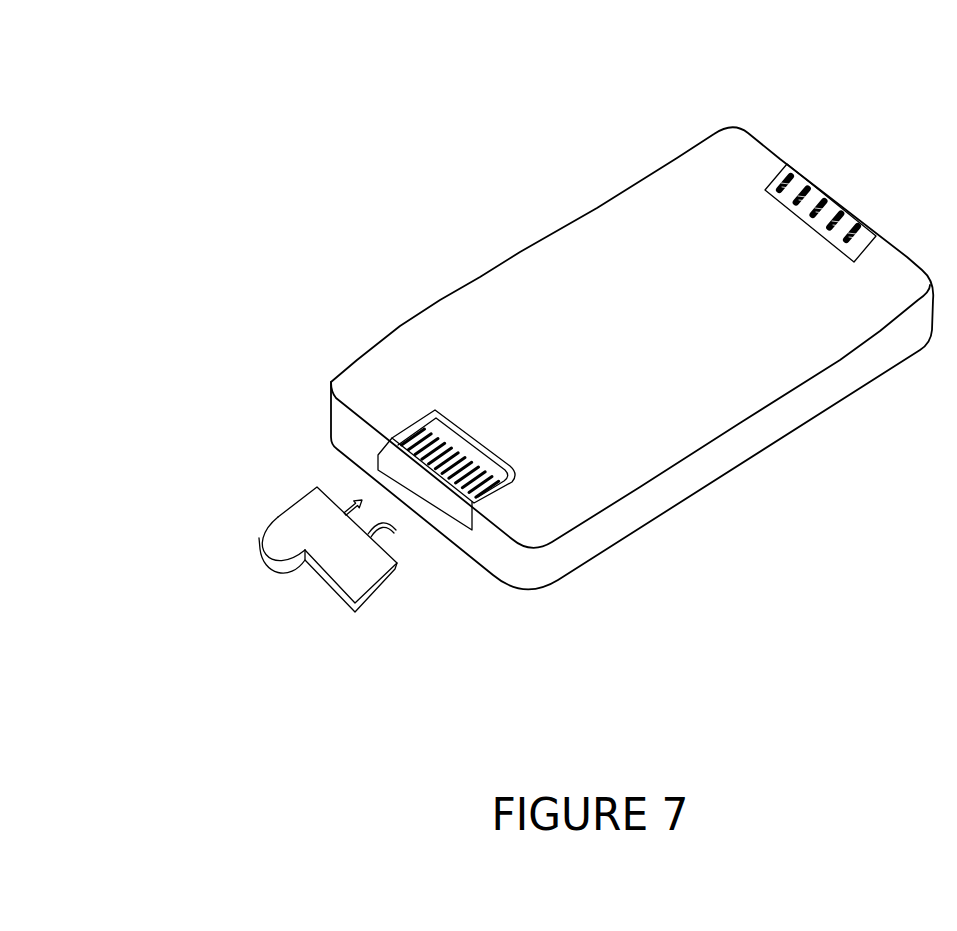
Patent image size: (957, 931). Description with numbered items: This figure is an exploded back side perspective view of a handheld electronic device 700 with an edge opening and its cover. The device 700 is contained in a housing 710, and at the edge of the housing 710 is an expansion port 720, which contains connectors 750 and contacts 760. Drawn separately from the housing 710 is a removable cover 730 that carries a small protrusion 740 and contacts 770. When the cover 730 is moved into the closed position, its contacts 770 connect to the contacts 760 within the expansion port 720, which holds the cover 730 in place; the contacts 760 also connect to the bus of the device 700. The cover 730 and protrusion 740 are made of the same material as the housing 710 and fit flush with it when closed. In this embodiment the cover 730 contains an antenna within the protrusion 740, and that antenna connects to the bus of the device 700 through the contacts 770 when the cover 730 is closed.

The handheld electronic device 700 is at (121, 41).
The housing 710 is at (651, 328).
The expansion port 720 is at (446, 405).
The removable cover 730 is at (328, 582).
The protrusion 740 is at (258, 533).
The connectors 750 is at (483, 497).
The contacts 760 is at (478, 450).
The contacts 770 is at (397, 531).